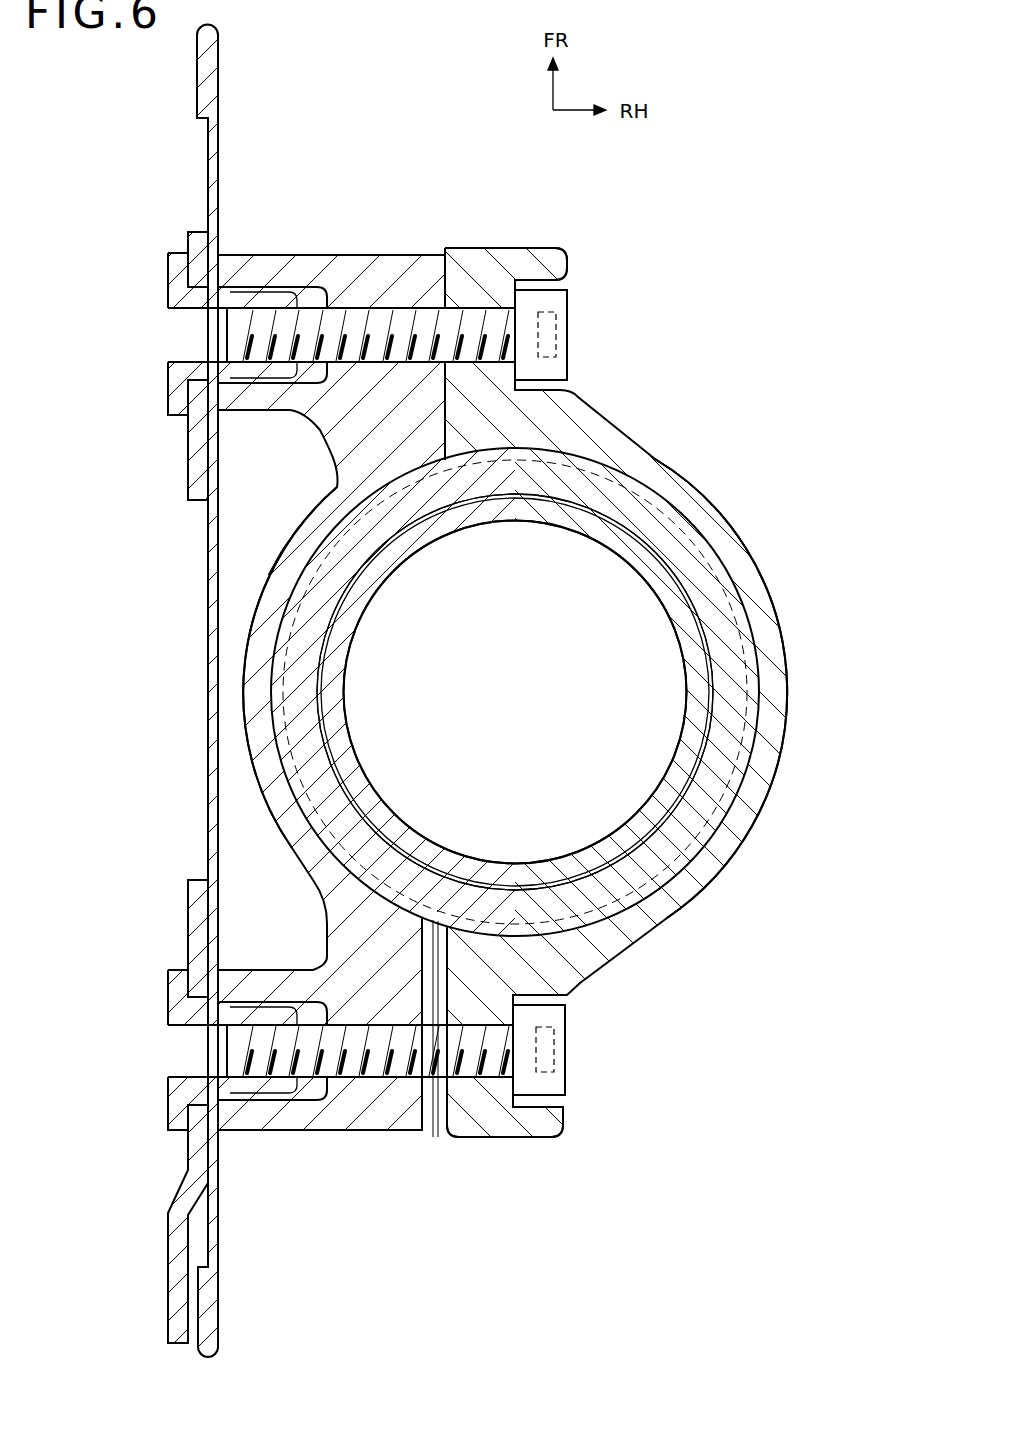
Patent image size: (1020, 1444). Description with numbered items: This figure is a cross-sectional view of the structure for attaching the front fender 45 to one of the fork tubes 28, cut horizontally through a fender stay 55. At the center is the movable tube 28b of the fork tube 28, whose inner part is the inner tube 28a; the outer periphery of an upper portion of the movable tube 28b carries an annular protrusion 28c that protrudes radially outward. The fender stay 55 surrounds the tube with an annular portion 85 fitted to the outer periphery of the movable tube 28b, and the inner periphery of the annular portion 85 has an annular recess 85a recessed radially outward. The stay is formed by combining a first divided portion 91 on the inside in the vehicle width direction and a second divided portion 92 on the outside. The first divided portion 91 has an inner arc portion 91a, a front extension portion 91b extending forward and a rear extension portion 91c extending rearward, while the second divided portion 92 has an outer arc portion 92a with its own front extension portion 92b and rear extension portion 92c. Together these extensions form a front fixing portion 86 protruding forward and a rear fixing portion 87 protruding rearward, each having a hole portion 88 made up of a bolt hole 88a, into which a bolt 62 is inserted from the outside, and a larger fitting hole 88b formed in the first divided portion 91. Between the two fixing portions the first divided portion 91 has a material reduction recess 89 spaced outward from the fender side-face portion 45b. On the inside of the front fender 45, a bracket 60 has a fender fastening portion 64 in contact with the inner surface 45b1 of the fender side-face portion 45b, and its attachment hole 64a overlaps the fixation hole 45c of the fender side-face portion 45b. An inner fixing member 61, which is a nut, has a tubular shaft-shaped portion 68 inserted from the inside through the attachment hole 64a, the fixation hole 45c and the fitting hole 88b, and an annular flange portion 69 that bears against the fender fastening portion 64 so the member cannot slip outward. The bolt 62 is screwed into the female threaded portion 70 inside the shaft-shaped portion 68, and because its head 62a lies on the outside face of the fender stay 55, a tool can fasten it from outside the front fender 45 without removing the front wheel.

The fork tube 28 is at (858, 548).
The inner cylinder of bushing 28a is at (693, 655).
The movable tube 28b is at (722, 612).
The protrusion 28c is at (436, 1085).
The front fender 45 is at (226, 114).
The fender side-face portion 45b is at (219, 162).
The inner surface 45b1 is at (206, 428).
The fixation hole 45c is at (210, 331).
The fender stay 55 is at (490, 105).
The bracket 60 is at (187, 492).
The inner fixing member 61 is at (168, 299).
The bolt 62 is at (568, 302).
The head 62a is at (558, 322).
The fender fastening portion 64 is at (196, 466).
The attachment hole 64a is at (216, 358).
The shaft-shaped portion 68 is at (288, 288).
The flange portion 69 is at (187, 249).
The female threaded portion 70 is at (321, 258).
The annular portion 85 is at (752, 540).
The recess 85a is at (600, 460).
The front fixing portion 86 is at (532, 248).
The rear fixing portion 87 is at (560, 1138).
The hole portion 88 is at (508, 330).
The bolt hole 88a is at (496, 344).
The fitting hole 88b is at (250, 286).
The material reduction recess 89 is at (293, 535).
The first divided portion 91 is at (411, 252).
The inner arc portion 91a is at (253, 697).
The front extension portion 91b is at (371, 276).
The rear extension portion 91c is at (380, 1128).
The second divided portion 92 is at (472, 250).
The outer arc portion 92a is at (777, 690).
The front extension portion 92b is at (496, 270).
The rear extension portion 92c is at (496, 1138).